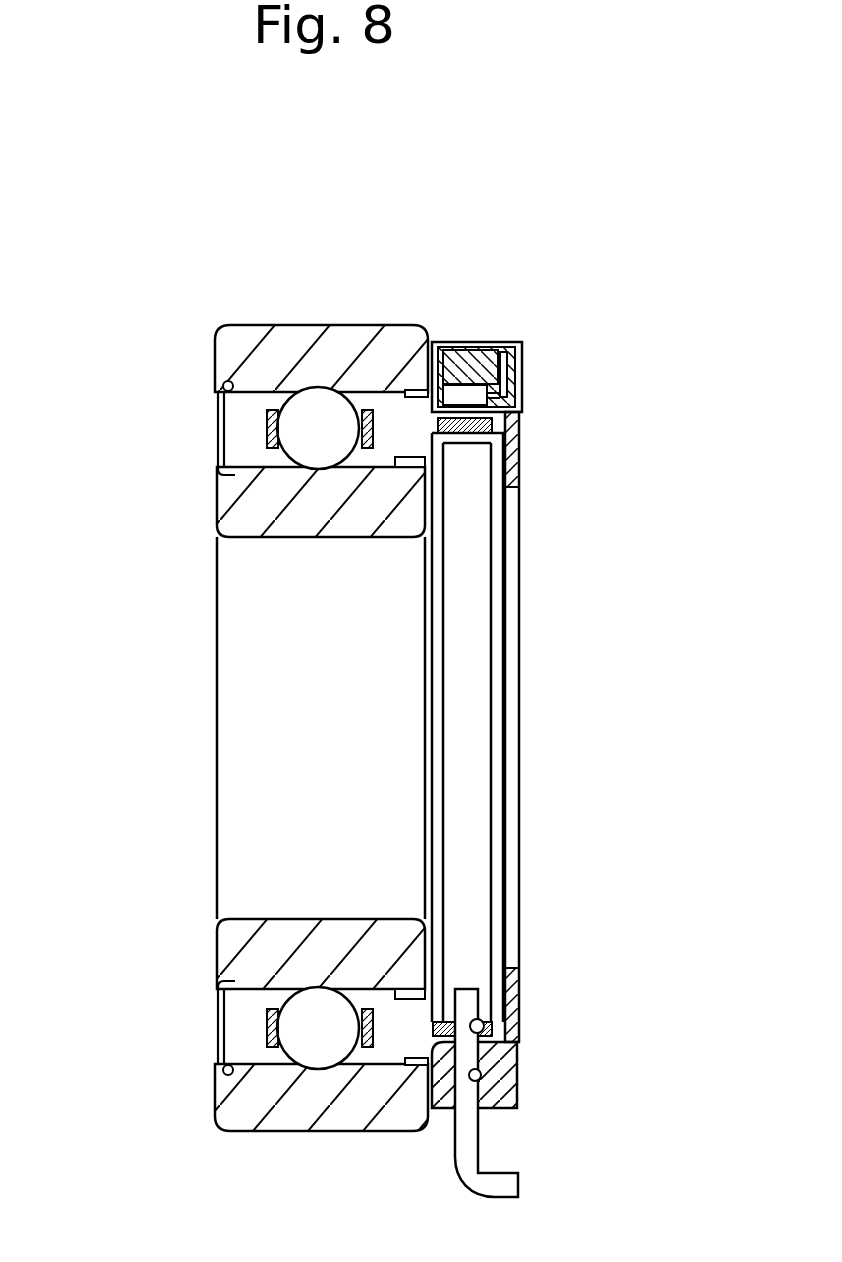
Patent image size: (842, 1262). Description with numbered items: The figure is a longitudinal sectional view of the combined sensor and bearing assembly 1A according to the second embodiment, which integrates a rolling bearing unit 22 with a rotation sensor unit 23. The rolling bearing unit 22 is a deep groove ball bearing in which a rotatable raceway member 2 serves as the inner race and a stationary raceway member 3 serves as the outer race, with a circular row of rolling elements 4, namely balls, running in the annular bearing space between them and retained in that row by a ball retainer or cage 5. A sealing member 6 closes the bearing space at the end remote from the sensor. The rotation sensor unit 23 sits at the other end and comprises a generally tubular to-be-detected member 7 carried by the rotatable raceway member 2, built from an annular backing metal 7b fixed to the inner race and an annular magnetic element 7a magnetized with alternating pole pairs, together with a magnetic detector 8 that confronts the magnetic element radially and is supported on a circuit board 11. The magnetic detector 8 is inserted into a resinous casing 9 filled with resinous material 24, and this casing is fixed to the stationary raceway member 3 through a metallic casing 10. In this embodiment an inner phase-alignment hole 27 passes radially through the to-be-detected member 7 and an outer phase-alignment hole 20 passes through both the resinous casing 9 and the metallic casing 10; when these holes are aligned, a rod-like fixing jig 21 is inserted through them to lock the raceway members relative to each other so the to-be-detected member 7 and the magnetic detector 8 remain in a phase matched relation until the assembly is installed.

The combined sensor and bearing assembly 1A is at (150, 219).
The rolling bearing unit 22 is at (182, 359).
The rotatable raceway member 2 is at (235, 507).
The stationary raceway member 3 is at (268, 344).
The rolling elements 4 is at (318, 445).
The sealing member 6 is at (217, 430).
The metallic casing 10 is at (380, 415).
The rotation sensor unit 23 is at (737, 280).
The ball retainer or cage 5 is at (444, 385).
The resinous casing 9 is at (483, 340).
The resinous material 24 is at (497, 347).
The circuit board 11 is at (523, 353).
The magnetic detector 8 is at (527, 373).
The to-be-detected member 7 is at (678, 427).
The annular magnetic element 7a is at (497, 425).
The annular backing metal 7b is at (467, 437).
The outer phase-alignment hole 20 is at (517, 1080).
The rod-like fixing jig 21 is at (493, 1187).
The inner phase-alignment hole 27 is at (480, 1020).